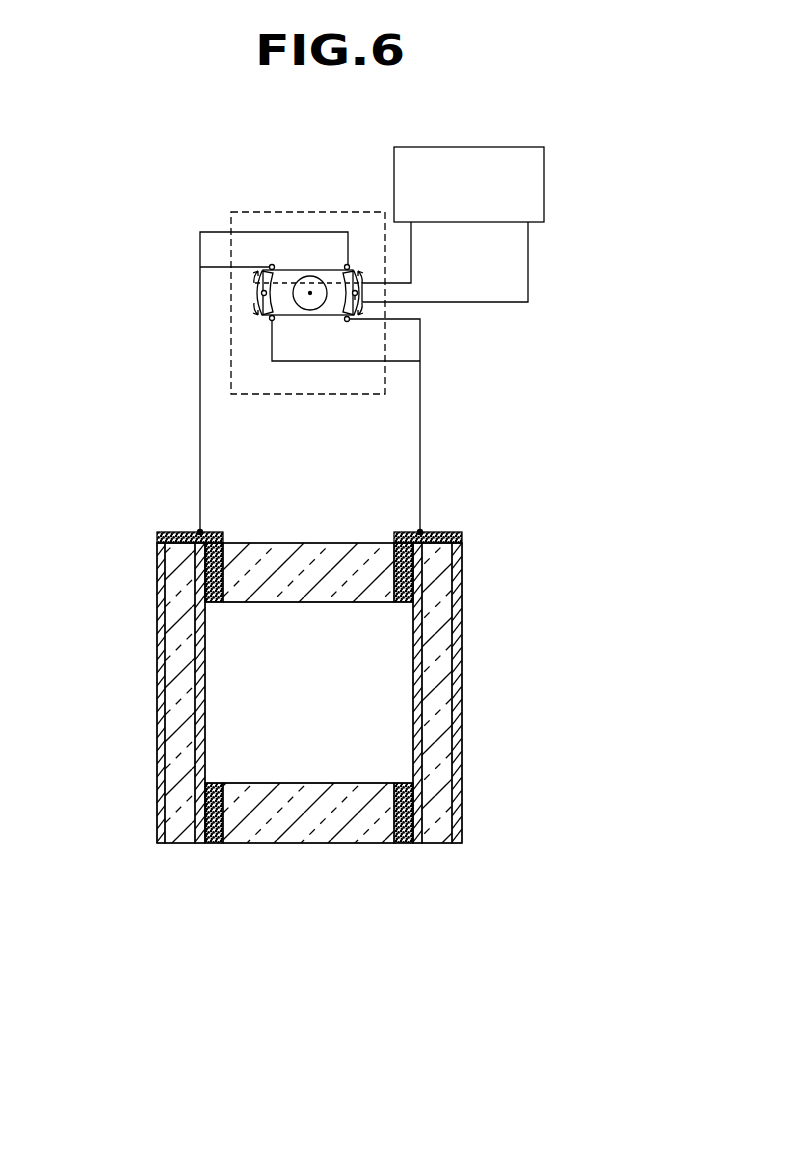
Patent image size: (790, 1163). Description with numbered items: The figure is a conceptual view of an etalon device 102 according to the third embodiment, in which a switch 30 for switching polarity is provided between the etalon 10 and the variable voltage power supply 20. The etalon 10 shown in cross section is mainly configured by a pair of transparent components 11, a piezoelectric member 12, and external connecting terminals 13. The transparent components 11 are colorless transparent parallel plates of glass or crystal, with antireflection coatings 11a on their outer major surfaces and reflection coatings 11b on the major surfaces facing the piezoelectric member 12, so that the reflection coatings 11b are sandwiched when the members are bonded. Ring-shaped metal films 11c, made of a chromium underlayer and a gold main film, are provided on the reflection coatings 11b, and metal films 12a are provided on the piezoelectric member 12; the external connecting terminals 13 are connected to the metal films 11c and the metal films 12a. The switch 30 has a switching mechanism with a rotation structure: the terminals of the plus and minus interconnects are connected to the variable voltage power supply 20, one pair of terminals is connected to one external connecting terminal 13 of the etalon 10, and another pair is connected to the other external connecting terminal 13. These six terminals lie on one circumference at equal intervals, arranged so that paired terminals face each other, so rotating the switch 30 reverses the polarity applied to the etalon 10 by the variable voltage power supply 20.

The etalon 10 is at (254, 712).
The transparent components 11 is at (177, 843).
The antireflection coatings 11a is at (161, 843).
The reflection coatings 11b is at (195, 843).
The metal films 11c is at (207, 843).
The piezoelectric member 12 is at (303, 843).
The metal films 12a is at (217, 843).
The external connecting terminals 13 is at (310, 518).
The variable voltage power supply 20 is at (394, 175).
The switch 30 is at (248, 212).
The etalon device 102 is at (558, 390).